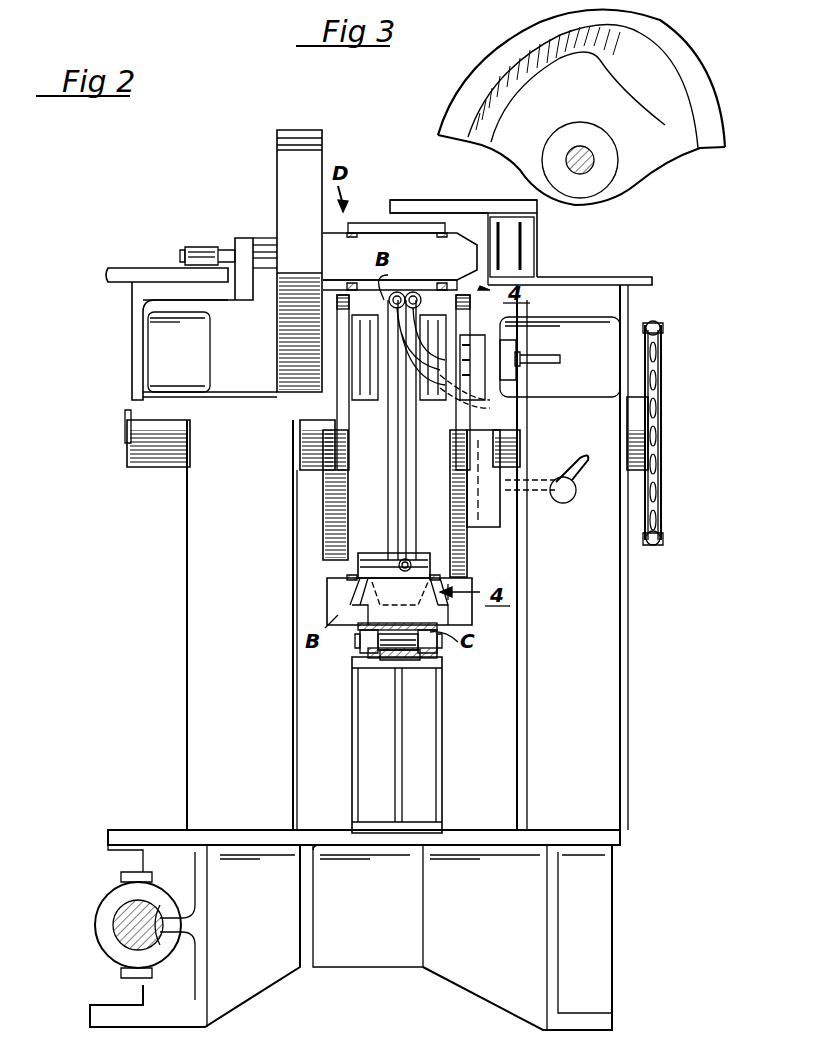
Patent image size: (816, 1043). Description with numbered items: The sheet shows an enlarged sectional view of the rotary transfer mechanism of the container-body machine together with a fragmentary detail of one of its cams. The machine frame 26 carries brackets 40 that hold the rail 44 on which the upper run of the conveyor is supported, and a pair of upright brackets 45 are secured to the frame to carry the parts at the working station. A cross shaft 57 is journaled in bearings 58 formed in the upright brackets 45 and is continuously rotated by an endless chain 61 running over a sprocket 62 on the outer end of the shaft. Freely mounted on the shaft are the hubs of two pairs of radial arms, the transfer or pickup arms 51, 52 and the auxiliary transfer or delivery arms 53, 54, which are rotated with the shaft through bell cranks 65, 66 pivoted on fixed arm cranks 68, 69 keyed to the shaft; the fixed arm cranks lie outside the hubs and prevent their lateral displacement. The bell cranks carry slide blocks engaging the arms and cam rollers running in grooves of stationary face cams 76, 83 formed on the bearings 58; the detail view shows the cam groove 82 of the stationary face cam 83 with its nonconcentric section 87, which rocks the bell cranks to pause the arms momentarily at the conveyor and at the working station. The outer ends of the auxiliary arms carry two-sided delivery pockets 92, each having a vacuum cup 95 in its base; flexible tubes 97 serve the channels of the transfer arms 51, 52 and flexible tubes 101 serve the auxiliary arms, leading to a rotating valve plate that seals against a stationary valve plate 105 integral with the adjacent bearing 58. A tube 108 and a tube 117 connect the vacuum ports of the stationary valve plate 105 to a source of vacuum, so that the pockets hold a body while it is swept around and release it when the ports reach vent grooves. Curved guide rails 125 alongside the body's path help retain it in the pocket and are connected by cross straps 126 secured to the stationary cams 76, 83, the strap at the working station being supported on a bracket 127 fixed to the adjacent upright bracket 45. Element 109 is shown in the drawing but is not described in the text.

In FIG. 2, the machine frame 26 is at (600, 895).
In FIG. 2, the brackets 40 is at (430, 752).
In FIG. 2, the rail 44 is at (412, 660).
In FIG. 2, the upright brackets 45 is at (195, 716).
In FIG. 2, the transfer arm 51 is at (430, 400).
In FIG. 2, the transfer arm 52 is at (406, 495).
In FIG. 2, the auxiliary transfer arm 53 is at (378, 400).
In FIG. 2, the auxiliary transfer arm 54 is at (388, 485).
In FIG. 2, the cross shaft 57 is at (126, 428).
In FIG. 3, the cross shaft 57 is at (590, 155).
In FIG. 2, the bearings 58 is at (160, 467).
In FIG. 2, the endless chain 61 is at (662, 540).
In FIG. 2, the sprocket 62 is at (662, 480).
In FIG. 2, the bell crank 65 is at (455, 296).
In FIG. 2, the bell crank 66 is at (356, 380).
In FIG. 2, the fixed arm crank 68 is at (485, 398).
In FIG. 2, the fixed arm crank 69 is at (350, 395).
In FIG. 2, the stationary face cam 76 is at (335, 520).
In FIG. 3, the cam groove 82 is at (488, 89).
In FIG. 2, the stationary face cam 83 is at (468, 545).
In FIG. 3, the stationary face cam 83 is at (480, 61).
In FIG. 3, the nonconcentric section 87 is at (640, 37).
In FIG. 2, the delivery pocket 92 is at (365, 560).
In FIG. 2, the vacuum cup 95 is at (410, 562).
In FIG. 2, the flexible tubes 97 is at (440, 338).
In FIG. 2, the flexible tubes 101 is at (402, 283).
In FIG. 2, the stationary valve plate 105 is at (490, 520).
In FIG. 2, the tube 108 is at (537, 349).
In FIG. 2, the valve body 109 is at (509, 375).
In FIG. 2, the tube 117 is at (556, 465).
In FIG. 2, the curved guide rails 125 is at (350, 243).
In FIG. 2, the cross straps 126 is at (366, 222).
In FIG. 2, the bracket 127 is at (480, 198).